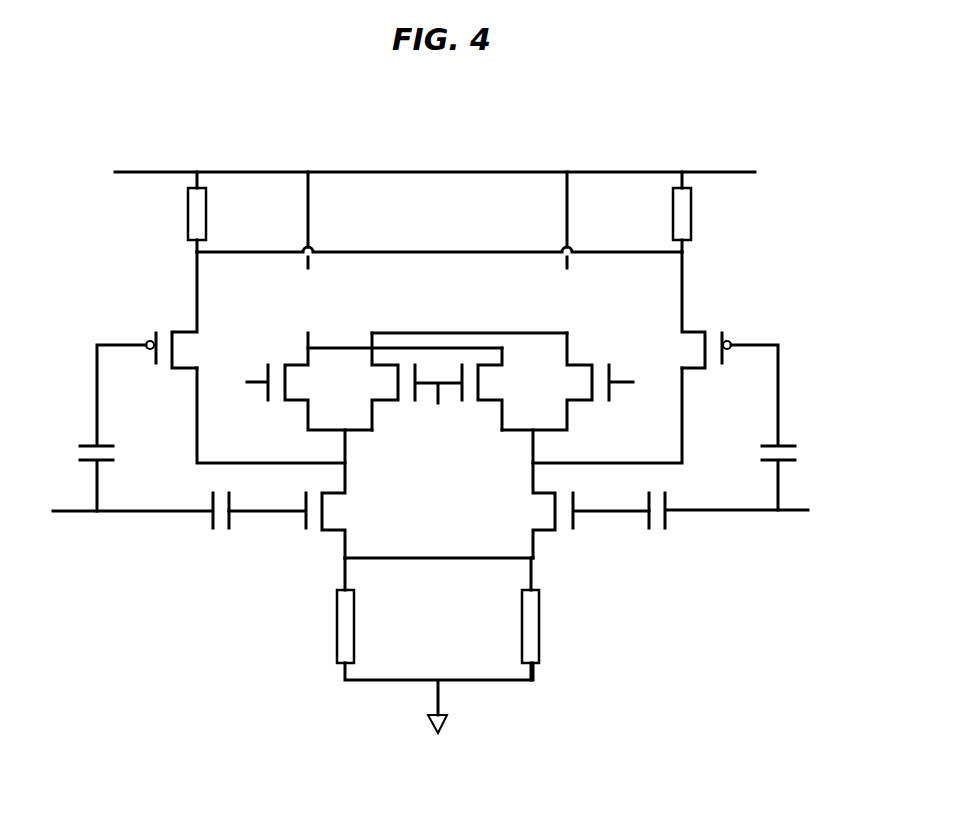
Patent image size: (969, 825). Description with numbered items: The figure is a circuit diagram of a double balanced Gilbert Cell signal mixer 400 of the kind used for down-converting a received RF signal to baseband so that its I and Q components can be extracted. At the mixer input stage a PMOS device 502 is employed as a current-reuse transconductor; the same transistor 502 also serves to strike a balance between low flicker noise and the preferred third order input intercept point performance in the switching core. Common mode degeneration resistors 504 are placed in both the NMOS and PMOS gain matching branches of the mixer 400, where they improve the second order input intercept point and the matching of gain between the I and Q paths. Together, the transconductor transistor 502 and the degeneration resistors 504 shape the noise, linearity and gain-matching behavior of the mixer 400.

The mixer circuit 400 is at (566, 146).
The PMOS device 502 is at (182, 330).
The common mode degeneration resistors 504 is at (187, 209).